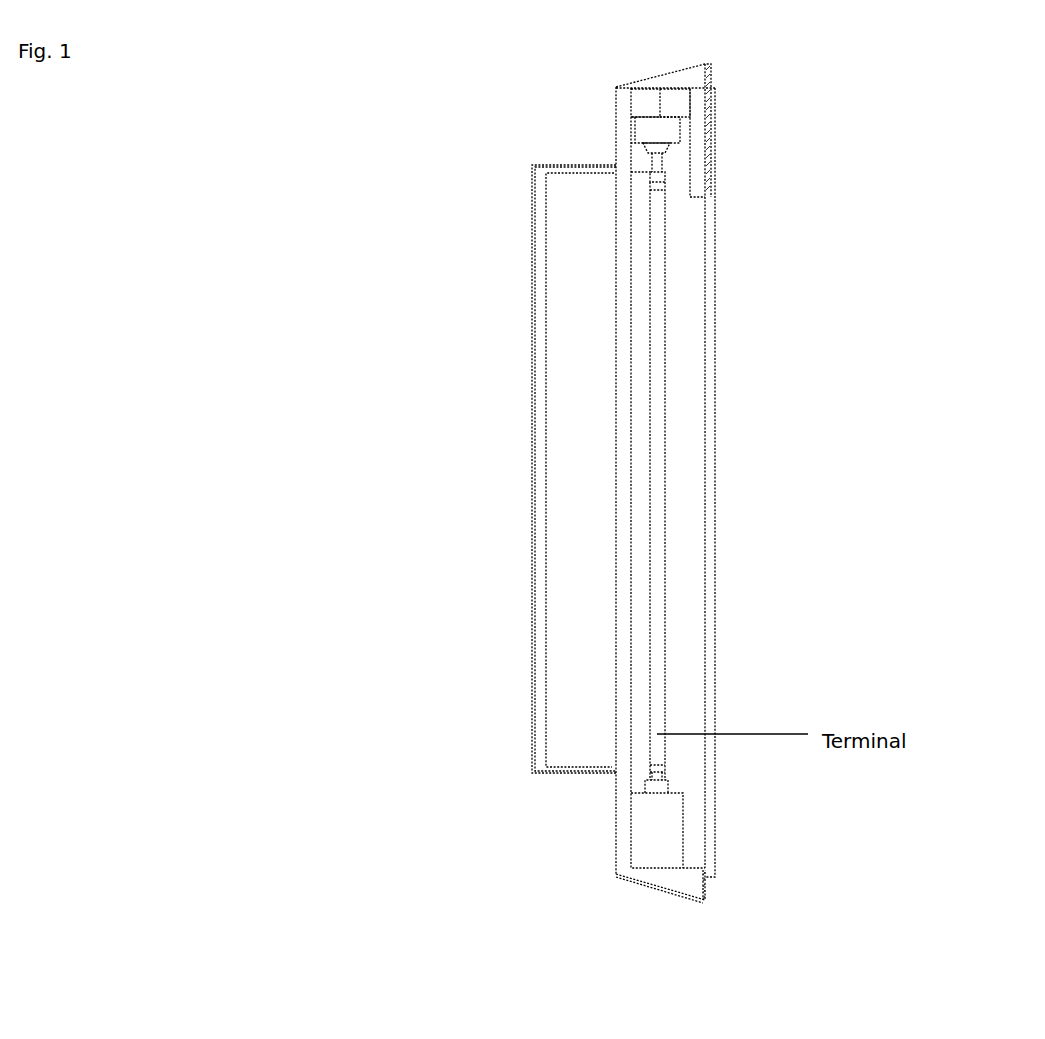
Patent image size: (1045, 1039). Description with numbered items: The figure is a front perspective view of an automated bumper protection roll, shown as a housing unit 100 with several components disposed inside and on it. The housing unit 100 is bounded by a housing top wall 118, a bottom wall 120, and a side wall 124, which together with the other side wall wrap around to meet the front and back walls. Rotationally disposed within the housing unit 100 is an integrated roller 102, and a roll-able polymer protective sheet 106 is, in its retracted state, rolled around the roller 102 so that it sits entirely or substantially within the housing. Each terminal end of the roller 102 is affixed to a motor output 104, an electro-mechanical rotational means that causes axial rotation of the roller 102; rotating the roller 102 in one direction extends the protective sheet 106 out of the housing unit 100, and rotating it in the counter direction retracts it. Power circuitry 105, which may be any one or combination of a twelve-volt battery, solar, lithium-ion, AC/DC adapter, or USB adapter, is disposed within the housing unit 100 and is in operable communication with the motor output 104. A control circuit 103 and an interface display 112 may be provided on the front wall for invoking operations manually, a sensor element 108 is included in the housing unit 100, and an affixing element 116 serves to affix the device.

The housing unit 100 is at (436, 170).
The integrated roller 102 is at (655, 409).
The control circuit 103 is at (642, 107).
The motor output 104 is at (657, 833).
The power circuitry 105 is at (678, 97).
The protective sheet 106 is at (590, 527).
The sensor element 108 is at (640, 133).
The interface display 112 is at (697, 149).
The affixing element 116 is at (720, 464).
The housing top wall 118 is at (705, 328).
The bottom wall 120 is at (608, 802).
The side wall 124 is at (670, 902).